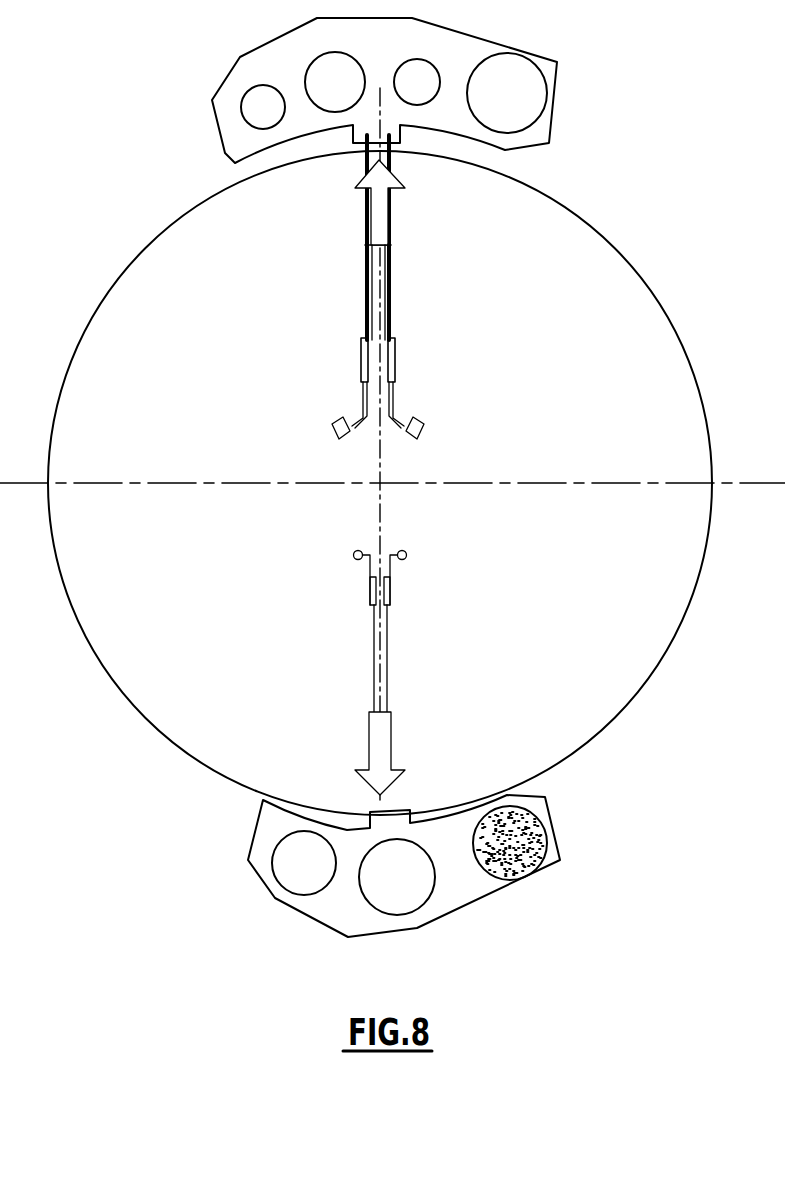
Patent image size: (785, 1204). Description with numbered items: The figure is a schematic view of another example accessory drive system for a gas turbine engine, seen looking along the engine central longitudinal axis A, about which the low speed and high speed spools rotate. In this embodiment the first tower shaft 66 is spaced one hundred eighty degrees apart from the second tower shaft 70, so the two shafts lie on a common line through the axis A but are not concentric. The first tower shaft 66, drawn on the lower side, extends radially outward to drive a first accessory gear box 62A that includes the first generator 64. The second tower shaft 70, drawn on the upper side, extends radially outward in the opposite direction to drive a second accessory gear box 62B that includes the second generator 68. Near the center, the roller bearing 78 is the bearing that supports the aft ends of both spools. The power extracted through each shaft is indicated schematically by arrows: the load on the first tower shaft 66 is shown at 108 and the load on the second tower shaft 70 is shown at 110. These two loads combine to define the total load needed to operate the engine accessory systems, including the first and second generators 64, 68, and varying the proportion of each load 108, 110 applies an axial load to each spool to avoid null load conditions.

The second accessory gear box 62B is at (356, 90).
The second generator 68 is at (532, 97).
The load on the second tower shaft 110 is at (366, 224).
The roller bearing 78 is at (383, 330).
The second tower shaft 70 is at (362, 403).
The engine central longitudinal axis A is at (397, 469).
The first tower shaft 66 is at (388, 635).
The load on the first tower shaft 108 is at (373, 735).
The first accessory gear box 62A is at (448, 866).
The first generator 64 is at (522, 875).